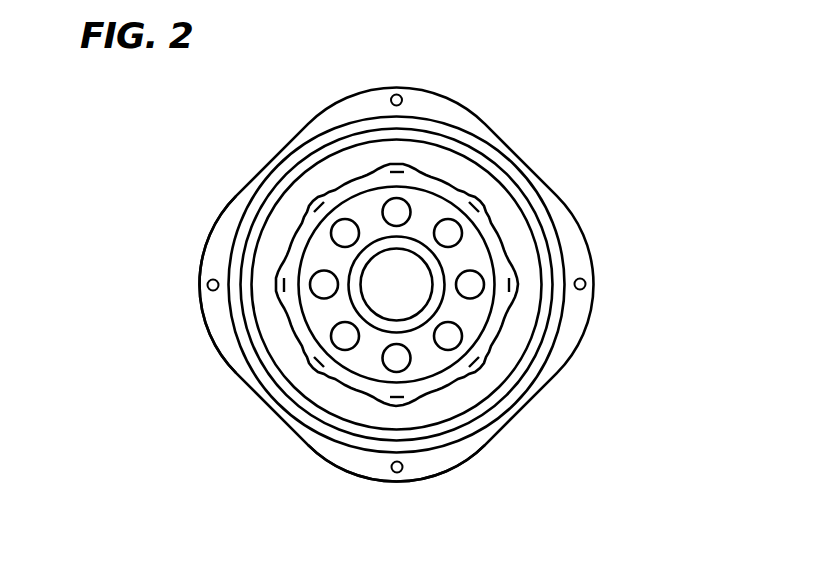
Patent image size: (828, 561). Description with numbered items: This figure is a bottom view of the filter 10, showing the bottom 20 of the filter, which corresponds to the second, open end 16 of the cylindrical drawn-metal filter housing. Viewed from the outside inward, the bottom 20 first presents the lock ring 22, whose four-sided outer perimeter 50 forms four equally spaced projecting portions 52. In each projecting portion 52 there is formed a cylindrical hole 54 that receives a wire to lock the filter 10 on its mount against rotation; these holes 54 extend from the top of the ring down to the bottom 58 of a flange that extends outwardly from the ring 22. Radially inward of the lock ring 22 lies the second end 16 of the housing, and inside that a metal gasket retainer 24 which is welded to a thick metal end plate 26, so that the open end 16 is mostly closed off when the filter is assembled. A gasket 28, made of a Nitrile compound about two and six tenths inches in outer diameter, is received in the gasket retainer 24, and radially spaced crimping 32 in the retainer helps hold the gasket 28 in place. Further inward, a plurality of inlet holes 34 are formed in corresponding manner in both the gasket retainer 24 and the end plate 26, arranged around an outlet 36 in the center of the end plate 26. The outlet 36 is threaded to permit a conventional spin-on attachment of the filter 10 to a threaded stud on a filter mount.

The filter 10 is at (679, 475).
The second end 16 is at (517, 170).
The bottom 20 is at (216, 367).
The lock ring 22 is at (222, 246).
The gasket retainer 24 is at (487, 230).
The end plate 26 is at (528, 329).
The gasket 28 is at (493, 370).
The crimping 32 is at (407, 163).
The inlet holes 34 is at (333, 226).
The outlet 36 is at (363, 282).
The outer perimeter 50 is at (428, 479).
The projecting portions 52 is at (347, 108).
The cylindrical hole 54 is at (586, 284).
The bottom 58 is at (357, 459).